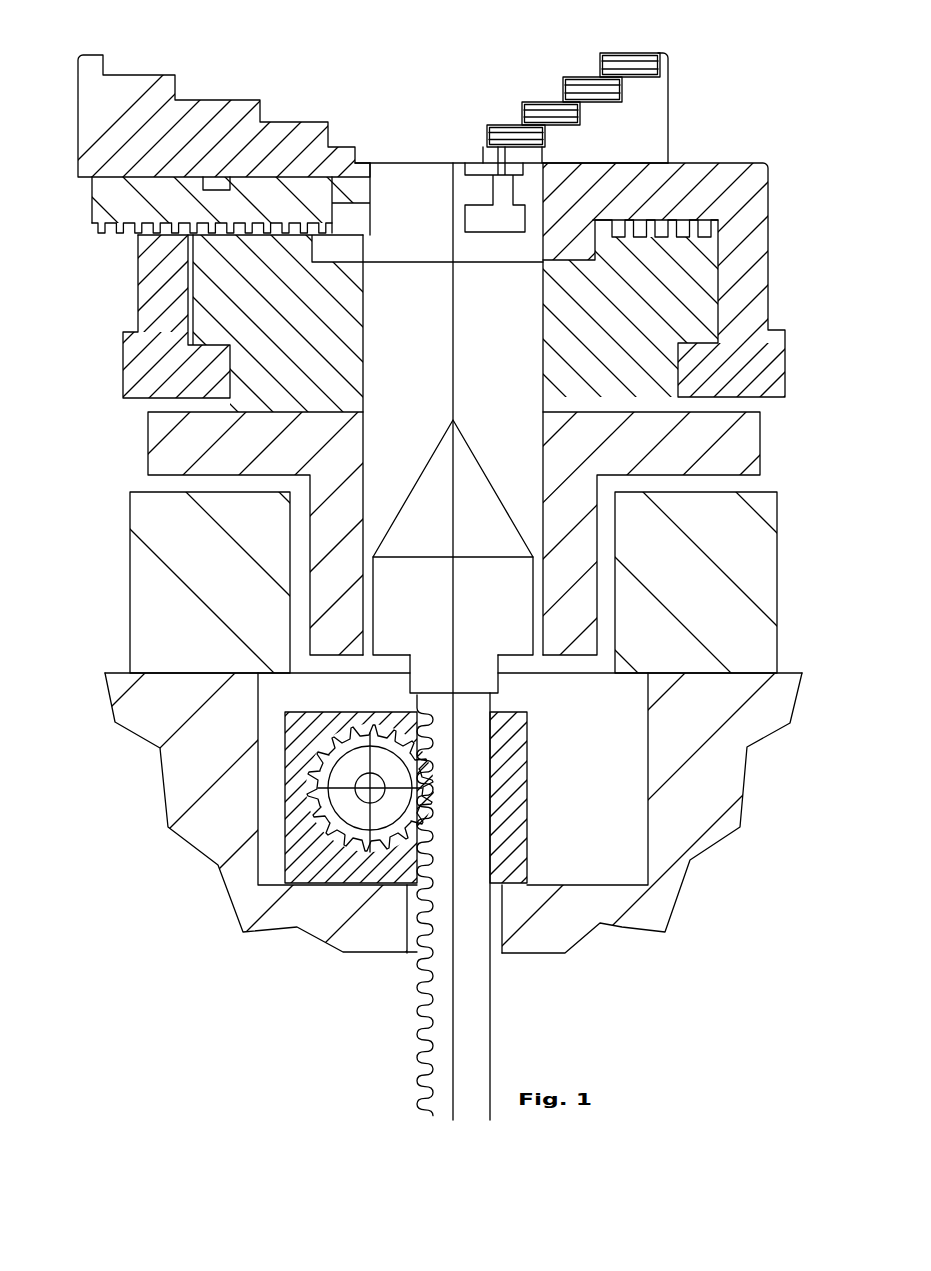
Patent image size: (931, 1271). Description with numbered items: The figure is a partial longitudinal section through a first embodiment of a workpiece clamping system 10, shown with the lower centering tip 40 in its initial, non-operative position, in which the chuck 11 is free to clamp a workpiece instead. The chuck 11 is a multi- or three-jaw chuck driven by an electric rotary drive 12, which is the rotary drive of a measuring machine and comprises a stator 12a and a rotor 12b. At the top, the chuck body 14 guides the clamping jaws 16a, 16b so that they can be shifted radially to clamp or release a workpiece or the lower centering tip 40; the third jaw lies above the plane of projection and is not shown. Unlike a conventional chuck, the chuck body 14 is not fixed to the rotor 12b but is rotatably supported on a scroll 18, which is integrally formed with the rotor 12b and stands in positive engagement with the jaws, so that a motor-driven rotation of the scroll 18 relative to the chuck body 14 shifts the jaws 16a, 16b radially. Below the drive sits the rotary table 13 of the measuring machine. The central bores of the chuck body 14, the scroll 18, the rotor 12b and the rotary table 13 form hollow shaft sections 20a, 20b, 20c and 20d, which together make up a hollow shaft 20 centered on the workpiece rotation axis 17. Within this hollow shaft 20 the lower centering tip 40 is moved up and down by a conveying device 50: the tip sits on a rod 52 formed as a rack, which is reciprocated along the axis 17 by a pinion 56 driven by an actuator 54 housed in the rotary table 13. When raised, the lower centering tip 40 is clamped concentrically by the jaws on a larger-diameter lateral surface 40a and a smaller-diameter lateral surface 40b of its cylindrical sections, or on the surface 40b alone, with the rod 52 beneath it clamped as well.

The workpiece clamping system 10 is at (458, 65).
The chuck 11 is at (709, 60).
The electric rotary drive 12 is at (401, 577).
The stator 12a is at (52, 440).
The rotor 12b is at (173, 463).
The rotary table 13 is at (708, 793).
The chuck body 14 is at (750, 218).
The clamping jaw 16a is at (638, 120).
The clamping jaw 16b is at (218, 123).
The workpiece rotation axis 17 is at (453, 162).
The scroll 18 is at (747, 163).
The hollow shaft 20 is at (428, 290).
The hollow shaft section 20a is at (386, 183).
The hollow shaft section 20b is at (490, 340).
The hollow shaft section 20c is at (540, 533).
The hollow shaft section 20d is at (277, 692).
The lower centering tip 40 is at (411, 603).
The lateral surface 40a is at (483, 628).
The lateral surface 40b is at (498, 685).
The conveying device 50 is at (512, 907).
The rod 52 is at (468, 1000).
The actuator 54 is at (510, 795).
The pinion 56 is at (357, 813).